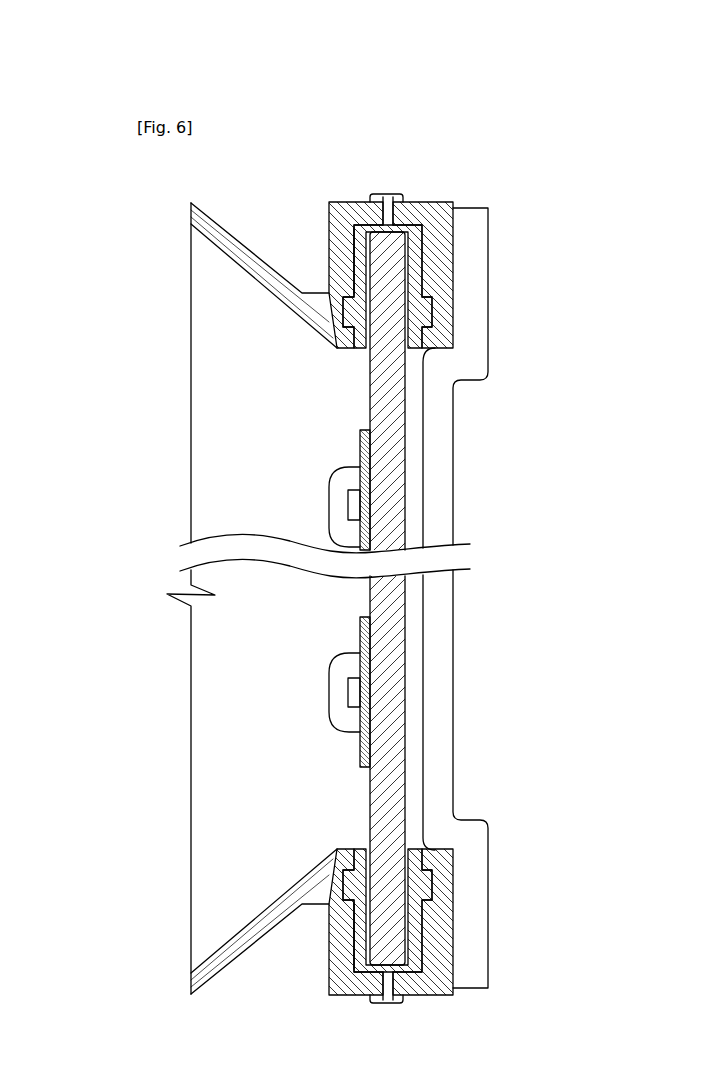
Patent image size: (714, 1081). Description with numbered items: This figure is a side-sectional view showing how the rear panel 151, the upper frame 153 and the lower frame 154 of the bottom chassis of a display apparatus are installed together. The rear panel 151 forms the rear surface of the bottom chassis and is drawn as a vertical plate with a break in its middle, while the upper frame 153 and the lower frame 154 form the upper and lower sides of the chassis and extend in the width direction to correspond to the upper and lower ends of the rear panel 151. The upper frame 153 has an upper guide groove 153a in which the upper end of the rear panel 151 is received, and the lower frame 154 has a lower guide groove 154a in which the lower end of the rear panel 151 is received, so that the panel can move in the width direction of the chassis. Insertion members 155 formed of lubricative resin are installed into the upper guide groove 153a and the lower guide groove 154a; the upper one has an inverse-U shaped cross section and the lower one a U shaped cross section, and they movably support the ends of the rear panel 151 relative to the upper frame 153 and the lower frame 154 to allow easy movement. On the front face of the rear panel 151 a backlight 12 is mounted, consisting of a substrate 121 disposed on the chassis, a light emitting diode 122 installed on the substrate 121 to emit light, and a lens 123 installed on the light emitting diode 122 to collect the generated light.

The backlight 12 is at (304, 692).
The substrate 121 is at (365, 755).
The light emitting diode 122 is at (348, 690).
The lens 123 is at (349, 660).
The rear panel 151 is at (387, 638).
The upper frame 153 is at (440, 212).
The upper guide groove 153a is at (352, 240).
The lower frame 154 is at (440, 995).
The lower guide groove 154a is at (353, 958).
The insertion member 155 is at (423, 262).